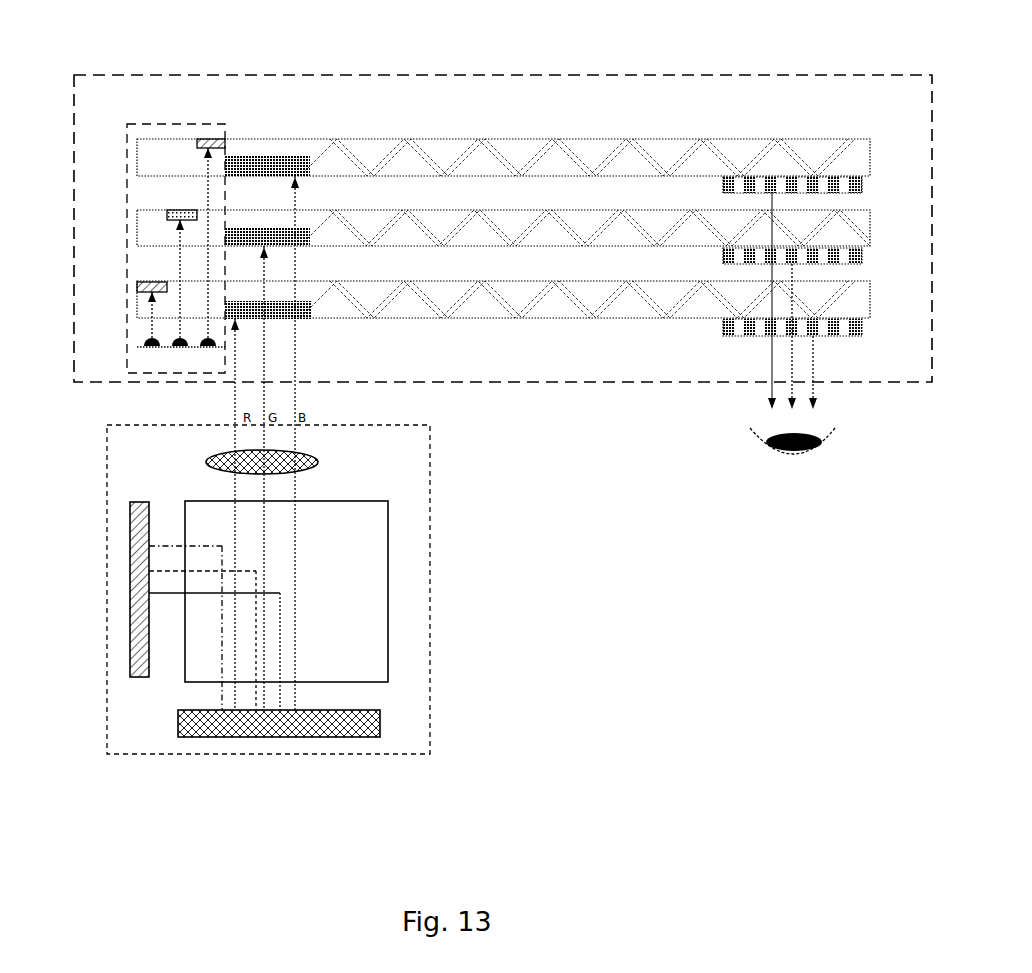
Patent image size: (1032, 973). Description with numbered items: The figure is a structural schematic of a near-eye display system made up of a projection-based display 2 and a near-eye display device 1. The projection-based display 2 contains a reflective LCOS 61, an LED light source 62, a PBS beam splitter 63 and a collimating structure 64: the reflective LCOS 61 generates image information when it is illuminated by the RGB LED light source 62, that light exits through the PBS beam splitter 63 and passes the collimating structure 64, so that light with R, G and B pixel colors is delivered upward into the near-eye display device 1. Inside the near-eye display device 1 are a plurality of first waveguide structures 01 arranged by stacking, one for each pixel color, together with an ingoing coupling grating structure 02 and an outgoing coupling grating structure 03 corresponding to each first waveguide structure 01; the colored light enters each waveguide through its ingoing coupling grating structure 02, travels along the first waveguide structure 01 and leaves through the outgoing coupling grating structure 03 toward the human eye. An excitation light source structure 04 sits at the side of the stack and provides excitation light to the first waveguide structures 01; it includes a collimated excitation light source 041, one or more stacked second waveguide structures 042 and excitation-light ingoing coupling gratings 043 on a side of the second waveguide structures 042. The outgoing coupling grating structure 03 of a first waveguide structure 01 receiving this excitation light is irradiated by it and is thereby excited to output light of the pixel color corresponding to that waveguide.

The near-eye display device 1 is at (523, 73).
The first waveguide structure 01 is at (860, 157).
The ingoing coupling grating structure 02 is at (247, 156).
The outgoing coupling grating structure 03 is at (862, 186).
The excitation light source structure 04 is at (180, 123).
The collimated excitation light source 041 is at (225, 355).
The second waveguide structure 042 is at (150, 232).
The excitation-light ingoing coupling grating 043 is at (182, 210).
The projection-based display 2 is at (430, 557).
The reflective LCOS 61 is at (357, 733).
The LED light source 62 is at (140, 650).
The PBS beam splitter 63 is at (363, 622).
The collimating structure 64 is at (318, 462).